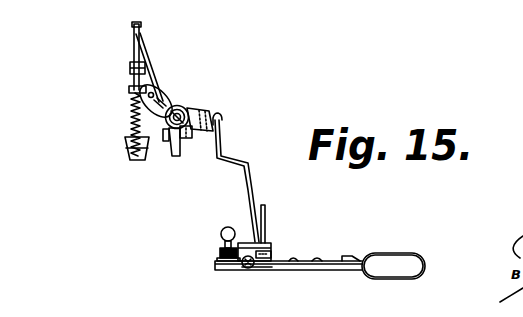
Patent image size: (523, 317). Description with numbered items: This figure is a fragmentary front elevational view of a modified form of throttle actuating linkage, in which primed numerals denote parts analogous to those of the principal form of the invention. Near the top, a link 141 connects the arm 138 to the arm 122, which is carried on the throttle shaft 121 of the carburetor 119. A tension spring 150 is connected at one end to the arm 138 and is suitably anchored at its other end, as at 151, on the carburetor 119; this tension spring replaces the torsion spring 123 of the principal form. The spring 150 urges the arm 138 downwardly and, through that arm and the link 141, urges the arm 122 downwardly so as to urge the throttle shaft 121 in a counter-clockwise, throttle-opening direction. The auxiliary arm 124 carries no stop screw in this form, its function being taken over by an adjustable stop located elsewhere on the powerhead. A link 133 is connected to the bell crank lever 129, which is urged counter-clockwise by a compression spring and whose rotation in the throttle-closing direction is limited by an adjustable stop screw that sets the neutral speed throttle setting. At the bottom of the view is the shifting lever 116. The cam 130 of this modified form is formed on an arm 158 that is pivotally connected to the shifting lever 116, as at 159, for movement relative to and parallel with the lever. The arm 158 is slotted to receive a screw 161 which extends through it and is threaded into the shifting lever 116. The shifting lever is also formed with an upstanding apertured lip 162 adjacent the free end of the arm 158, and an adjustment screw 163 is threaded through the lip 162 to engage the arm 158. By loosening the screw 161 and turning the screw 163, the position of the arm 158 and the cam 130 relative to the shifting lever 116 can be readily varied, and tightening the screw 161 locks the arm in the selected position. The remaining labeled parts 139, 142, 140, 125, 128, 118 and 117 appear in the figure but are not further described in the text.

The rod tip 139 is at (132, 28).
The vertical rod 142 is at (142, 40).
The link 141 is at (148, 76).
The arm 138 is at (130, 70).
The foot bracket 140 is at (129, 89).
The tension spring 150 is at (129, 63).
The anchor 151 is at (127, 146).
The arm 122 is at (160, 89).
The throttle shaft 121 is at (188, 109).
The torsion spring 123 is at (203, 113).
The auxiliary arm 124 is at (222, 121).
The link 133 is at (250, 167).
The block 125 is at (188, 140).
The carburetor 119 is at (175, 158).
The stop 128 is at (165, 143).
The shifting lever 116 is at (333, 271).
The pin 118 is at (221, 232).
The cam 130 is at (246, 243).
The upstanding apertured lip 162 is at (272, 252).
The bell crank lever 129 is at (267, 237).
The adjustment screw 163 is at (249, 269).
The screw 161 is at (268, 271).
The arm 158 is at (296, 271).
The pivotal connection 159 is at (320, 257).
The cylinder 117 is at (413, 244).